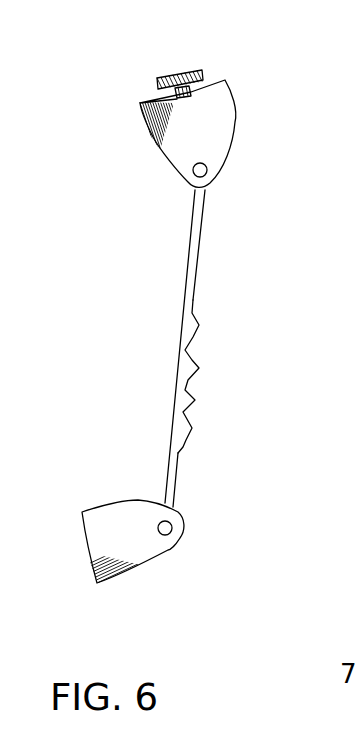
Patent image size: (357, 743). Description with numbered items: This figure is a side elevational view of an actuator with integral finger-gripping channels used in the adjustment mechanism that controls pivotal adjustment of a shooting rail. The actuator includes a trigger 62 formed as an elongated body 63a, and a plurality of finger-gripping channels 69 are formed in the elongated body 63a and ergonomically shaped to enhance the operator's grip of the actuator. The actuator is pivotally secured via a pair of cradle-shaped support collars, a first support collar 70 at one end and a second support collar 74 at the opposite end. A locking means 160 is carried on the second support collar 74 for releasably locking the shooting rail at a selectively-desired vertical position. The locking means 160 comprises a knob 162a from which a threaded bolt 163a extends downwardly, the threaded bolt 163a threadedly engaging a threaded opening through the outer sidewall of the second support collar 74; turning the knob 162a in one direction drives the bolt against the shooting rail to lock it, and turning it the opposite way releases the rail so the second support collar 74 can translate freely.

The trigger 62 is at (268, 140).
The locking means 160 is at (217, 62).
The knob 162a is at (192, 72).
The threaded bolt 163a is at (185, 90).
The second support collar 74 is at (230, 95).
The elongated body 63a is at (197, 278).
The finger-gripping channels 69 is at (187, 350).
The support collar 70 is at (165, 553).